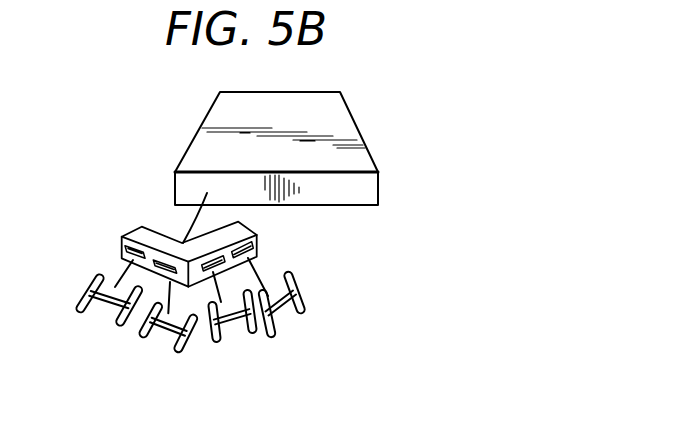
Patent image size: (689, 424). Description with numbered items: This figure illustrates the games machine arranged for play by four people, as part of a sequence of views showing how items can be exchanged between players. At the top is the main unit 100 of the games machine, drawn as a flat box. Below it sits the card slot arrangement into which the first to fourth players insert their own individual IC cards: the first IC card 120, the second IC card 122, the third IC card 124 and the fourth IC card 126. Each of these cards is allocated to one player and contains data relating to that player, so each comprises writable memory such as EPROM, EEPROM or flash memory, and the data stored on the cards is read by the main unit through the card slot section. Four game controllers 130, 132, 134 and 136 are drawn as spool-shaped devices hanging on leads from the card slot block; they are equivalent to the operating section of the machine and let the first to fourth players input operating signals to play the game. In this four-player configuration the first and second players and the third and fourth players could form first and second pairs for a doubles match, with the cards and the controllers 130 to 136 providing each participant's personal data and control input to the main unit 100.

The main unit 100 is at (327, 122).
The first IC card 120 is at (122, 240).
The second IC card 122 is at (172, 240).
The third IC card 124 is at (252, 263).
The fourth IC card 126 is at (256, 237).
The game controller 130 is at (84, 310).
The game controller 132 is at (167, 342).
The game controller 134 is at (230, 332).
The game controller 136 is at (285, 318).